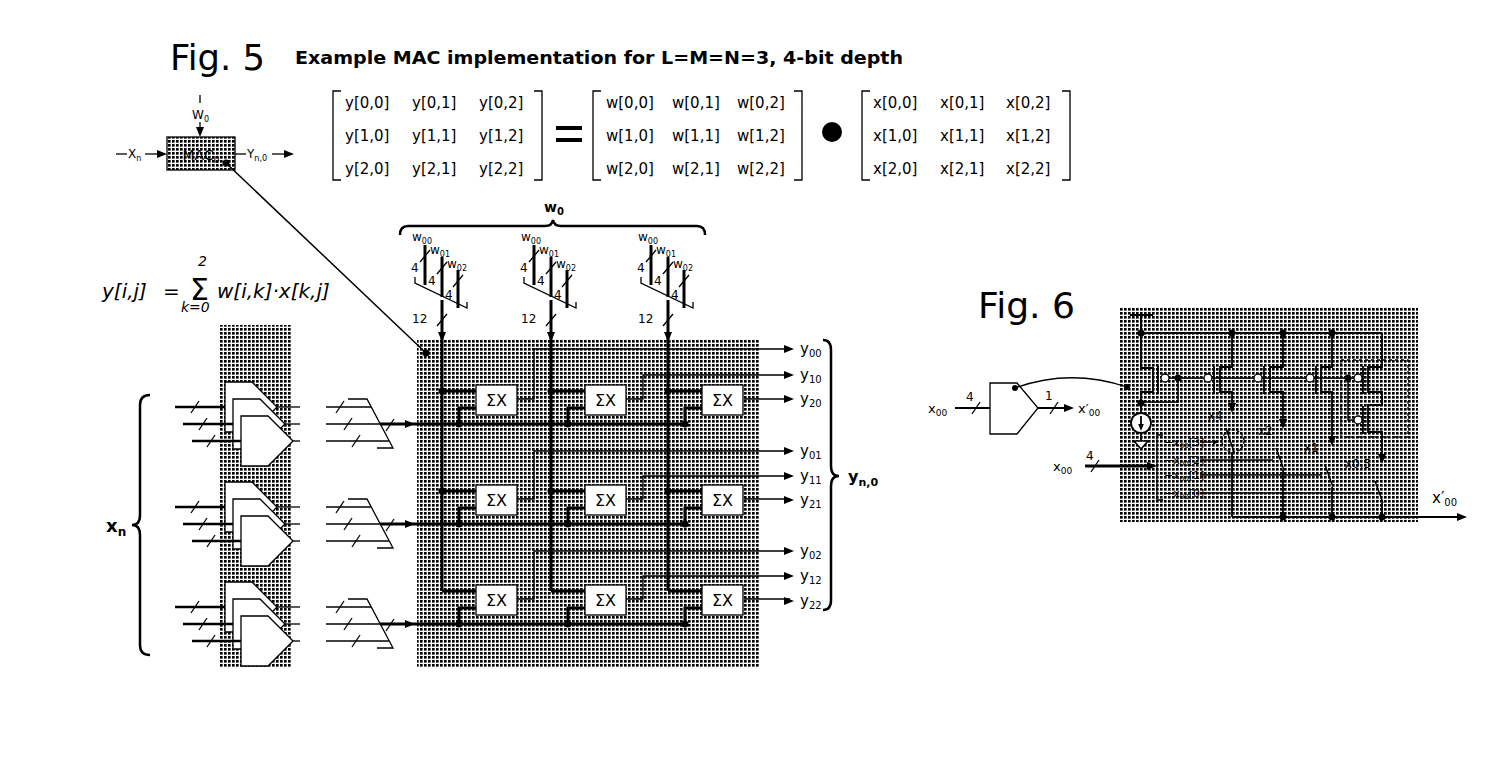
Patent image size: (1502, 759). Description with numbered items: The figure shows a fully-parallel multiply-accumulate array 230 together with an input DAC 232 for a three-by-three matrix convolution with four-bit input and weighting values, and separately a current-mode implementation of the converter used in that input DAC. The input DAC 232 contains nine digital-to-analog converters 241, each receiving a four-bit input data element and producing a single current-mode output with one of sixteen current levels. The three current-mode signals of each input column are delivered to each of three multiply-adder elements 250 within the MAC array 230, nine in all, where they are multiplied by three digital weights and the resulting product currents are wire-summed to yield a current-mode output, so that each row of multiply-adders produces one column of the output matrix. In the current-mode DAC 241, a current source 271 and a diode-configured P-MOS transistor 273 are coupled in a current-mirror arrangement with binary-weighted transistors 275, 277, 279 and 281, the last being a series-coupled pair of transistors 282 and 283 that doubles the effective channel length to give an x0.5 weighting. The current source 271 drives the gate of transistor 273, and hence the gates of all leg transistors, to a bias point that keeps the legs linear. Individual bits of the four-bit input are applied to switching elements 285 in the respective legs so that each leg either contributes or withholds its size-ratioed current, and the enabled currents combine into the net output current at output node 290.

In FIG. 5, the multiply-accumulate array 230 is at (585, 502).
In FIG. 5, the input DAC 232 is at (271, 496).
In FIG. 5, the digital-to-analog converter 241 is at (237, 392).
In FIG. 6, the digital-to-analog converter 241 is at (1003, 427).
In FIG. 5, the multiply-adder element 250 is at (492, 386).
In FIG. 6, the current source 271 is at (1152, 422).
In FIG. 6, the diode-configured transistor 273 is at (1158, 368).
In FIG. 6, the x4 transistor 275 is at (1214, 368).
In FIG. 6, the x2 transistor 277 is at (1264, 368).
In FIG. 6, the x1 transistor 279 is at (1315, 368).
In FIG. 6, the series-coupled transistor pair 281 is at (1390, 360).
In FIG. 6, the series-coupled transistor 282 is at (1375, 380).
In FIG. 6, the series-coupled transistor 283 is at (1372, 406).
In FIG. 6, the switching element 285 is at (1238, 430).
In FIG. 6, the output node 290 is at (1387, 512).